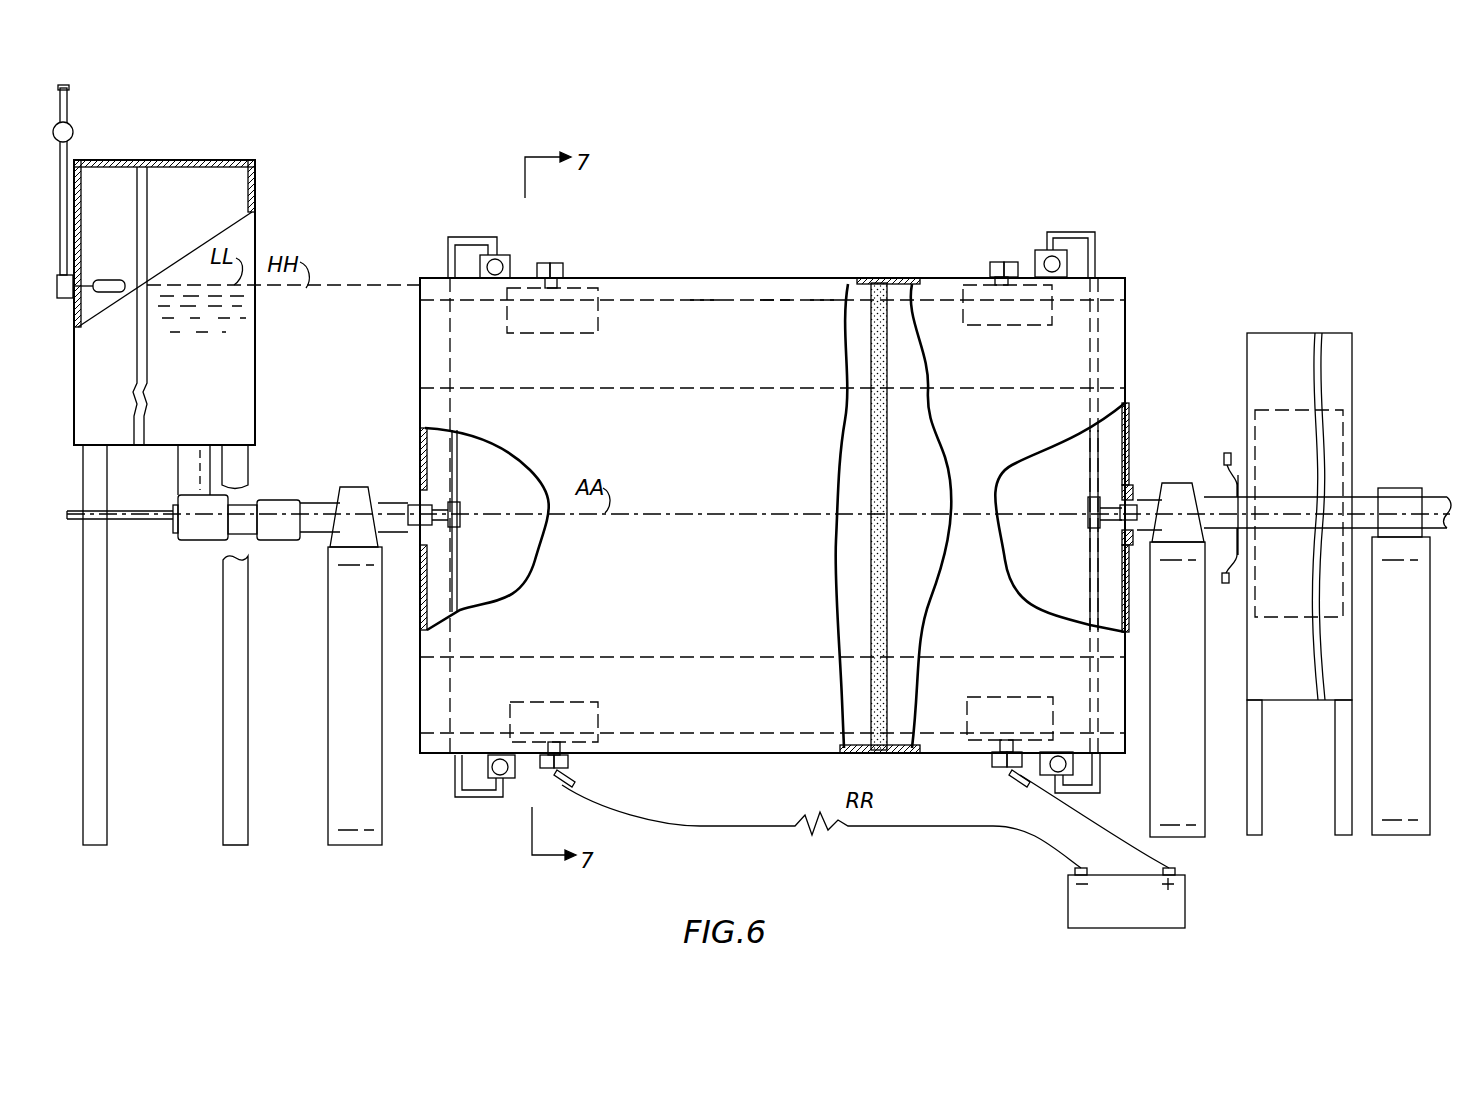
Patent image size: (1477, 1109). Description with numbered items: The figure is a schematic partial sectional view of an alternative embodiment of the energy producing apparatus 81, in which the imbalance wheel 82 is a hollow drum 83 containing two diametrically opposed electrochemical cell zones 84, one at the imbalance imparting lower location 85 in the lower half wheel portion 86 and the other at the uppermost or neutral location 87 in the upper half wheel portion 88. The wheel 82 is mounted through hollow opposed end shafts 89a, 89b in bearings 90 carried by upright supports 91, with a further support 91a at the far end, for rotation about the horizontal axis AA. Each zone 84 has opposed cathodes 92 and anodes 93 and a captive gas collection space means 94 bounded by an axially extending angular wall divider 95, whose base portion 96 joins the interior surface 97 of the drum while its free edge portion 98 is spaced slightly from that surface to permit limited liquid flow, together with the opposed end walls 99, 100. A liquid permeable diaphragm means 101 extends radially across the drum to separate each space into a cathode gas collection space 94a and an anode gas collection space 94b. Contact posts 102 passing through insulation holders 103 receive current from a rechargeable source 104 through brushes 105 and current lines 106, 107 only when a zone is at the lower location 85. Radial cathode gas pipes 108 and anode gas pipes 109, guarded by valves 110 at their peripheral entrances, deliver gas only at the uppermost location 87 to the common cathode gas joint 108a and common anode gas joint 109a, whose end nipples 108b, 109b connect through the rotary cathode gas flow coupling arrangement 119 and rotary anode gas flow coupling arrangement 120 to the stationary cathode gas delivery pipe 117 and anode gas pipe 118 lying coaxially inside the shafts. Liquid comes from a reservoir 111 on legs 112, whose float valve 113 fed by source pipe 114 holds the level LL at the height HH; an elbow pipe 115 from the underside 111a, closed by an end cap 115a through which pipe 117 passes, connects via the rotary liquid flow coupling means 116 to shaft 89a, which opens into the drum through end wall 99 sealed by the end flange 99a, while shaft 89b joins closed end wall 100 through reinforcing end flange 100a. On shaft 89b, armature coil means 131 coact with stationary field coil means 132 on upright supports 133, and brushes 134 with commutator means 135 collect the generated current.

The energy producing apparatus 81 is at (388, 256).
The imbalance wheel 82 is at (420, 300).
The hollow drum 83 is at (722, 278).
The electrochemical cell zones 84 is at (705, 382).
The lower location 85 is at (805, 753).
The lower half wheel portion 86 is at (727, 753).
The uppermost location 87 is at (805, 278).
The upper half wheel portion 88 is at (836, 278).
The hollow end shaft 89a is at (310, 503).
The hollow end shaft 89b is at (1212, 497).
The bearings 90 is at (350, 487).
The upright supports 91 is at (382, 801).
The outer bearing support pillar 91a is at (1428, 641).
The cathodes 92 is at (580, 333).
The anodes 93 is at (963, 324).
The gas collection space means 94 is at (774, 382).
The cathode gas collection space 94a is at (520, 382).
The anode gas collection space 94b is at (906, 386).
The angular wall divider 95 is at (636, 390).
The base portion 96 is at (765, 300).
The interior surface 97 is at (698, 300).
The free edge portion 98 is at (822, 300).
The end wall 99 is at (420, 348).
The end flange 99a is at (420, 490).
The end wall 100 is at (1125, 329).
The reinforcing end flange 100a is at (1128, 490).
The diaphragm means 101 is at (888, 441).
The contact posts 102 is at (548, 263).
The insulation holders 103 is at (565, 271).
The rechargeable source 104 is at (1068, 902).
The brushes 105 is at (578, 783).
The current line 106 is at (752, 827).
The current line 107 is at (1102, 835).
The cathode gas pipes 108 is at (453, 334).
The common cathode gas joint 108a is at (462, 513).
The end nipple 108b is at (455, 500).
The anode gas pipes 109 is at (1090, 364).
The common anode gas joint 109a is at (1088, 521).
The end nipple 109b is at (1095, 497).
The valves 110 is at (503, 255).
The liquid reservoir 111 is at (257, 250).
The underside 111a is at (162, 446).
The legs 112 is at (107, 651).
The float valve 113 is at (92, 286).
The source pipe 114 is at (68, 256).
The elbow pipe 115 is at (178, 490).
The end cap 115a is at (172, 536).
The rotary liquid flow coupling means 116 is at (279, 541).
The cathode gas delivery pipe 117 is at (133, 523).
The anode gas pipe 118 is at (1285, 505).
The rotary cathode gas flow coupling arrangement 119 is at (415, 500).
The rotary anode gas flow coupling arrangement 120 is at (1120, 518).
The armature coil means 131 is at (1292, 620).
The stationary field coil means 132 is at (1333, 333).
The upright supports 133 is at (1318, 700).
The brushes 134 is at (1227, 453).
The commutator means 135 is at (1255, 470).